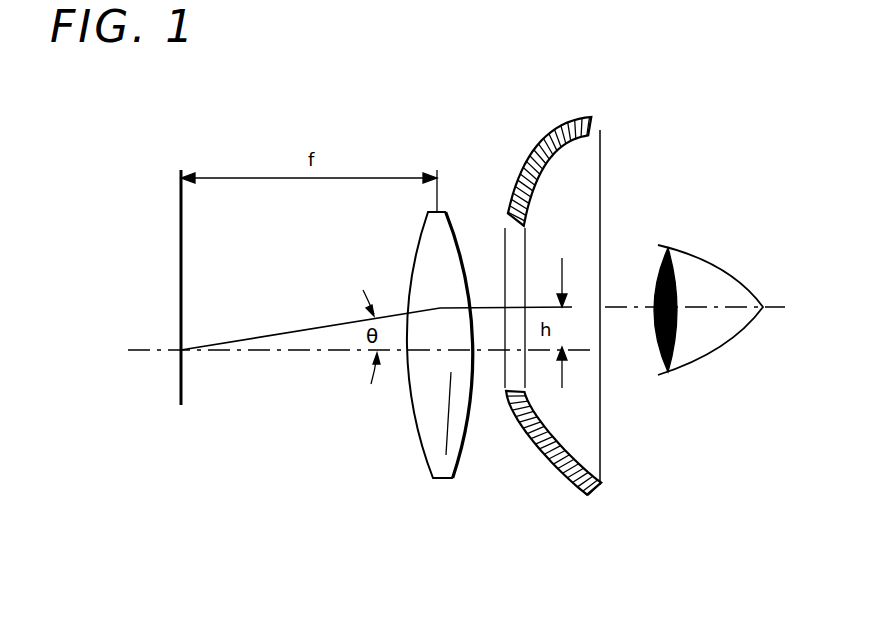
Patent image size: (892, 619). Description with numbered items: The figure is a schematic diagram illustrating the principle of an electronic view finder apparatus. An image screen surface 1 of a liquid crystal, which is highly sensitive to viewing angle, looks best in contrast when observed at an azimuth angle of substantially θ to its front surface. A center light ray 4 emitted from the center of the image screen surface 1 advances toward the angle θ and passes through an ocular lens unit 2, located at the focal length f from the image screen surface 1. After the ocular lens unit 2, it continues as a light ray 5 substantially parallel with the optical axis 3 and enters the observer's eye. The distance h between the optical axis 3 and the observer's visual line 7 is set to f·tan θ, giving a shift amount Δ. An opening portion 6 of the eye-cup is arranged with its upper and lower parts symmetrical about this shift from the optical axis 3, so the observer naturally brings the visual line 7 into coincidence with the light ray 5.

The image screen surface 1 is at (187, 372).
The ocular lens unit 2 is at (418, 428).
The optical axis 3 is at (268, 352).
The center light ray 4 is at (298, 330).
The light ray 5 is at (488, 300).
The opening portion 6 is at (522, 244).
The visual line 7 is at (622, 307).